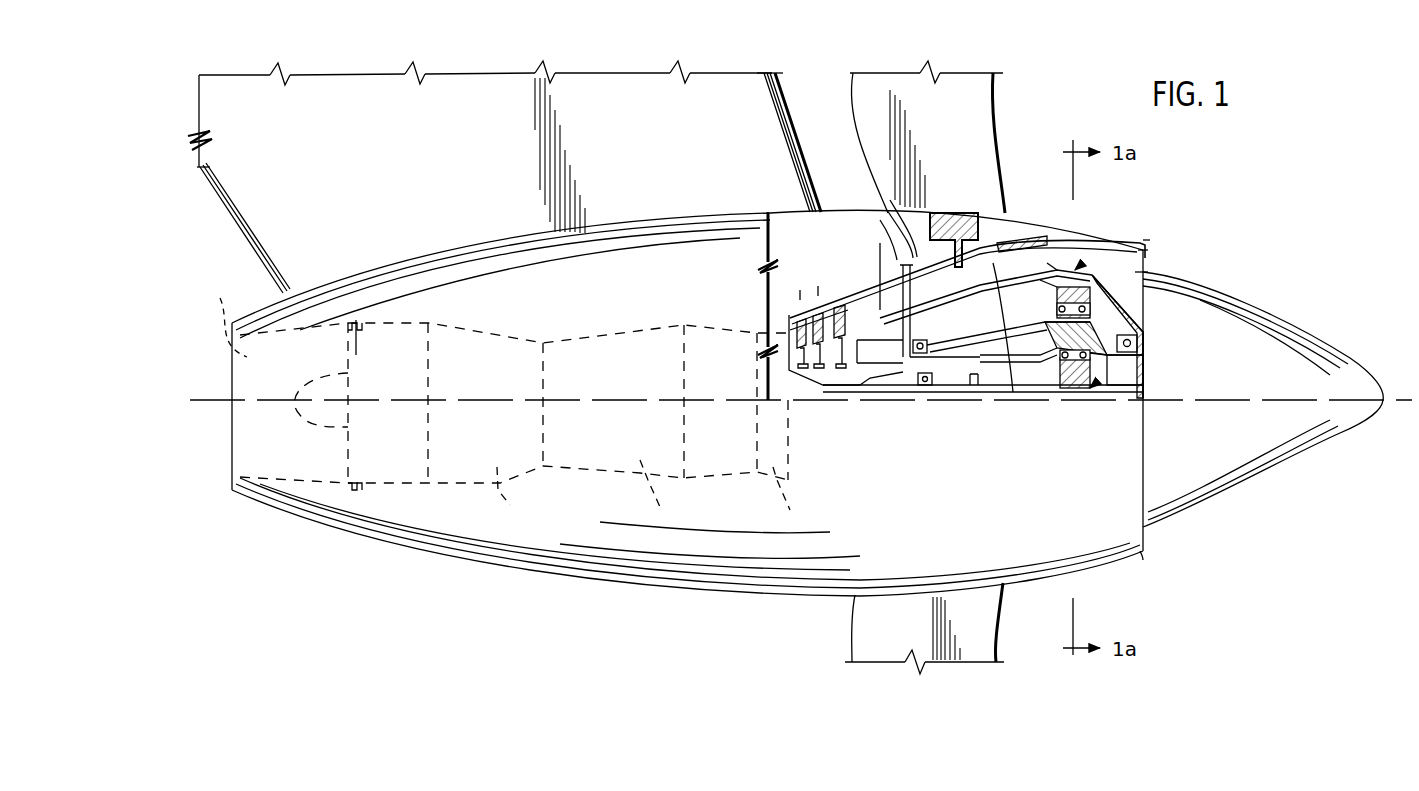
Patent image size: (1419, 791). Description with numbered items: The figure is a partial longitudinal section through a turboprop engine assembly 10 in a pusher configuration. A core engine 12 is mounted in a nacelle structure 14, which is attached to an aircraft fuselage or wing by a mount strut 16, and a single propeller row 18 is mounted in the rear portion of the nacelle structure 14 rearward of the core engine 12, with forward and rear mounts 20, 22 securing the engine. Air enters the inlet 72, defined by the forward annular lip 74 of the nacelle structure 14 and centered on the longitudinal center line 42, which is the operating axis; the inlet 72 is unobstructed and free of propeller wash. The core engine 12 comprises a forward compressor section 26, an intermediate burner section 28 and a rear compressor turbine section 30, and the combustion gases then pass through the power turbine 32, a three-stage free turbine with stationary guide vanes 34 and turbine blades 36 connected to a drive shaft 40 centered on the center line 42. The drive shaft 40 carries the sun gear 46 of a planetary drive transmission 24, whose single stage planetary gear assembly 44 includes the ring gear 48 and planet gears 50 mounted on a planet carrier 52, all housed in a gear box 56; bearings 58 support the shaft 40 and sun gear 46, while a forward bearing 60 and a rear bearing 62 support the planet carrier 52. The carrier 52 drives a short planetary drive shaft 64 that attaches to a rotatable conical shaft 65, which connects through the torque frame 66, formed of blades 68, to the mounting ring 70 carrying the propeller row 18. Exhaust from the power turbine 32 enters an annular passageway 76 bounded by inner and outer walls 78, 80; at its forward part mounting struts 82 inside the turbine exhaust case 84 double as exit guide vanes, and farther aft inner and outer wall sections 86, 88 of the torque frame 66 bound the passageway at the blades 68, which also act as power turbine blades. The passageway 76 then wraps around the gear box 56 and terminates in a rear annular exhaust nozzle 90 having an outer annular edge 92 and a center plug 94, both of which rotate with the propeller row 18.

The turboprop engine assembly 10 is at (1150, 567).
The core engine 12 is at (588, 337).
The nacelle structure 14 is at (713, 217).
The mount strut 16 is at (765, 108).
The propeller row 18 is at (988, 88).
The forward mount 20 is at (356, 330).
The rear mount 22 is at (880, 243).
The planetary drive transmission 24 is at (1100, 252).
The compressor section 26 is at (519, 492).
The burner section 28 is at (662, 488).
The compressor turbine section 30 is at (794, 493).
The power turbine 32 is at (838, 292).
The stationary guide vanes 34 is at (830, 335).
The turbine blades 36 is at (847, 400).
The drive shaft 40 is at (877, 403).
The longitudinal center line 42 is at (1347, 397).
The single stage planetary gear assembly 44 is at (1140, 413).
The sun gear 46 is at (1083, 400).
The ring gear 48 is at (1133, 238).
The planet gears 50 is at (1085, 392).
The planet carrier 52 is at (1123, 325).
The gear box 56 is at (997, 387).
The bearings 58 is at (843, 400).
The forward bearing 60 is at (975, 382).
The rear bearing 62 is at (1140, 353).
The planetary drive shaft 64 is at (1140, 378).
The conical shaft 65 is at (1040, 325).
The torque frame 66 is at (1047, 263).
The torque frame blades 68 is at (1040, 280).
The mounting ring 70 is at (972, 214).
The inlet 72 is at (217, 320).
The forward annular lip 74 is at (233, 323).
The annular passageway 76 is at (993, 263).
The inner wall 78 is at (890, 200).
The outer wall 80 is at (887, 210).
The mounting struts 82 is at (880, 220).
The turbine exhaust case 84 is at (900, 300).
The inner wall section 86 is at (1120, 235).
The outer wall section 88 is at (1000, 262).
The rear annular exhaust nozzle 90 is at (1140, 273).
The outer annular edge 92 is at (1140, 249).
The center plug 94 is at (1302, 350).